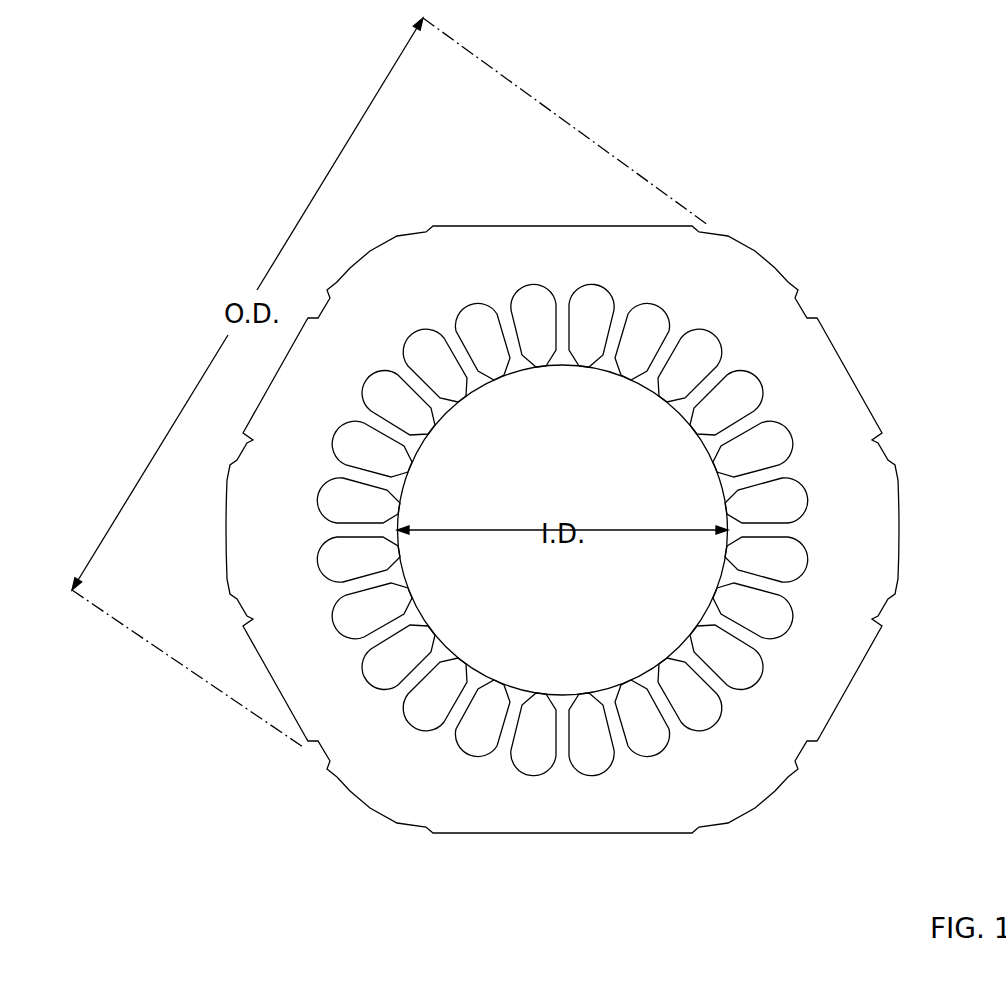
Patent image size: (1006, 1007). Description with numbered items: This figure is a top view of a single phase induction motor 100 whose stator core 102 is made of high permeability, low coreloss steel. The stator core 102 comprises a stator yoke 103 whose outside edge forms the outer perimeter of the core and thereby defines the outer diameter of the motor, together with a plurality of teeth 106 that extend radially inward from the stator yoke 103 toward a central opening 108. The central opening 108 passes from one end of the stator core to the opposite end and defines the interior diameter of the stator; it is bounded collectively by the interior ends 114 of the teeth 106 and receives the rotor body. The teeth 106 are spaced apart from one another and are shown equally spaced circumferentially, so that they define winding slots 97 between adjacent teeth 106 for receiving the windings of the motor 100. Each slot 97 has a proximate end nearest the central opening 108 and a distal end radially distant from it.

The single phase induction motor 100 is at (916, 100).
The stator core 102 is at (843, 354).
The stator yoke 103 is at (838, 531).
The interior ends 114 is at (650, 392).
The central opening 108 is at (576, 648).
The teeth 106 is at (827, 665).
The slots 97 is at (730, 662).